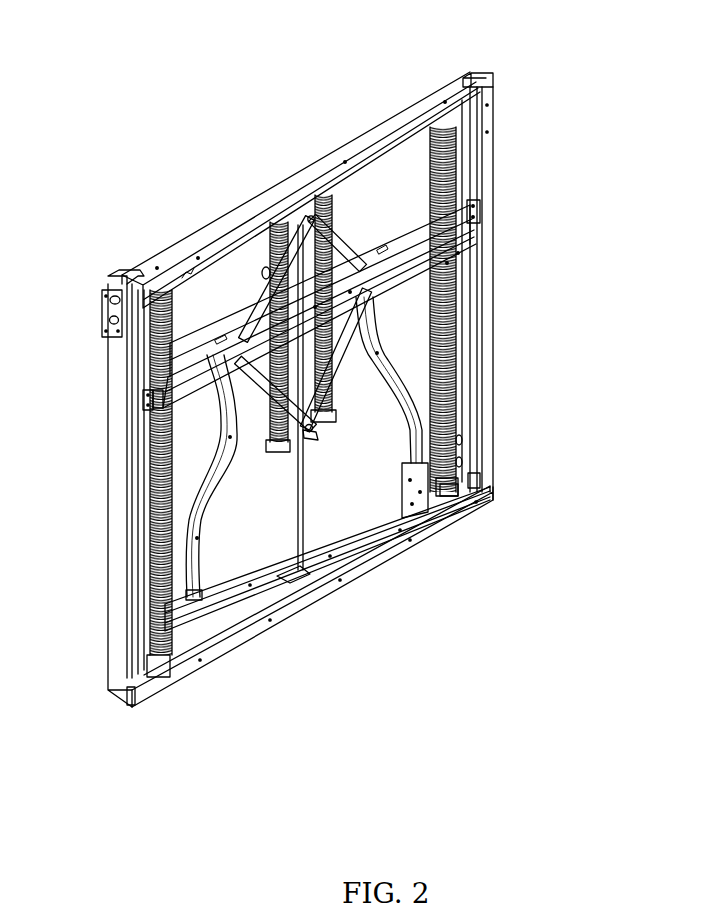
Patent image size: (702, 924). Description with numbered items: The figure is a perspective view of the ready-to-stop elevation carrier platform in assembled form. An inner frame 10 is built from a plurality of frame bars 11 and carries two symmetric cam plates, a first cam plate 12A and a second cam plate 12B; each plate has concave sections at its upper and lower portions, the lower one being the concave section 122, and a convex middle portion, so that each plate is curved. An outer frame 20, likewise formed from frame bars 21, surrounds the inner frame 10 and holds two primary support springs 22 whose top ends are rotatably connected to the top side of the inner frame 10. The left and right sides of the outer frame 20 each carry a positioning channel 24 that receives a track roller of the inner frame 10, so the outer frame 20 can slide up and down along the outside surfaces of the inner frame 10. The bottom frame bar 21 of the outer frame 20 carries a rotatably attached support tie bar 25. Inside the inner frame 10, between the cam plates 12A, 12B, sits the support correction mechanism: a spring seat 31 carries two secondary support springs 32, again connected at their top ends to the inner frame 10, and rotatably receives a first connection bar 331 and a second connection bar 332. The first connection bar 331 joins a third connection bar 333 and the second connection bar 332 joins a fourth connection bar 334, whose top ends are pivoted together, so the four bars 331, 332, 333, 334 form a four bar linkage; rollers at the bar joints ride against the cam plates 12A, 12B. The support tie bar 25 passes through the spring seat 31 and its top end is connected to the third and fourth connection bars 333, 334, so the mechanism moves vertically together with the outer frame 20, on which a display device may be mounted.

The inner frame 10 is at (324, 369).
The frame bars 11 is at (297, 183).
The first cam plate 12A is at (213, 487).
The second cam plate 12B is at (415, 428).
The concave section 122 is at (443, 489).
The outer frame 20 is at (288, 368).
The frame bars 21 is at (488, 387).
The primary support springs 22 is at (452, 318).
The positioning channel 24 is at (474, 74).
The support tie bar 25 is at (303, 487).
The spring seat 31 is at (313, 437).
The secondary support springs 32 is at (318, 216).
The first connection bar 331 is at (253, 427).
The second connection bar 332 is at (337, 378).
The third connection bar 333 is at (255, 293).
The fourth connection bar 334 is at (347, 248).